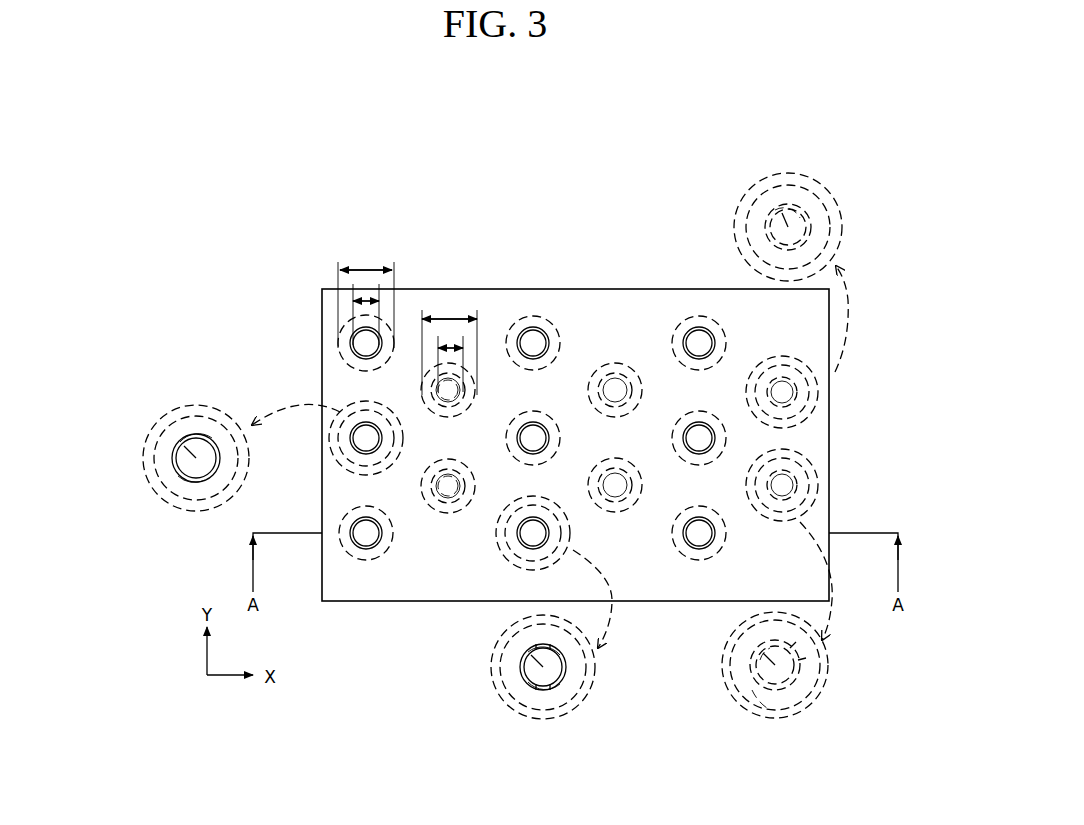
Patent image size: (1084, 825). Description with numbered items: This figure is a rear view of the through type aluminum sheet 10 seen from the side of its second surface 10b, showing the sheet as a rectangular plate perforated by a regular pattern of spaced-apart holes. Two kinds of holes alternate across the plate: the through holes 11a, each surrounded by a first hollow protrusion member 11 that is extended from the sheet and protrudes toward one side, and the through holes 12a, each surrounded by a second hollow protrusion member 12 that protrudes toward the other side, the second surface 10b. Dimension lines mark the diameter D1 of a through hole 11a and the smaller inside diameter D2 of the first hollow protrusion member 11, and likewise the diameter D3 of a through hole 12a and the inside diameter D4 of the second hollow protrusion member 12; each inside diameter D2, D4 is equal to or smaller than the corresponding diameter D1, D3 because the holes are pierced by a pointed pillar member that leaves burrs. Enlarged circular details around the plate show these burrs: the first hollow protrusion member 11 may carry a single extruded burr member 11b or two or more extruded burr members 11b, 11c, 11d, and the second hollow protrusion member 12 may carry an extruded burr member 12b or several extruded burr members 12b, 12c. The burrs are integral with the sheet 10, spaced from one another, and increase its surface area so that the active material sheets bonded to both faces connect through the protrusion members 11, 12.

The through type aluminum sheet 10 is at (568, 280).
The second surface 10b is at (638, 306).
The first hollow protrusion member 11 is at (476, 398).
The through hole 11a is at (452, 404).
The extruded burr member 11b is at (822, 216).
The extruded burr member 11c is at (826, 680).
The extruded burr member 11d is at (756, 708).
The second hollow protrusion member 12 is at (340, 366).
The through hole 12a is at (352, 355).
The extruded burr member 12b is at (176, 485).
The extruded burr member 12c is at (566, 682).
The diameter D1 is at (449, 346).
The inside diameter D2 is at (466, 340).
The diameter D3 is at (366, 297).
The inside diameter D4 is at (360, 292).